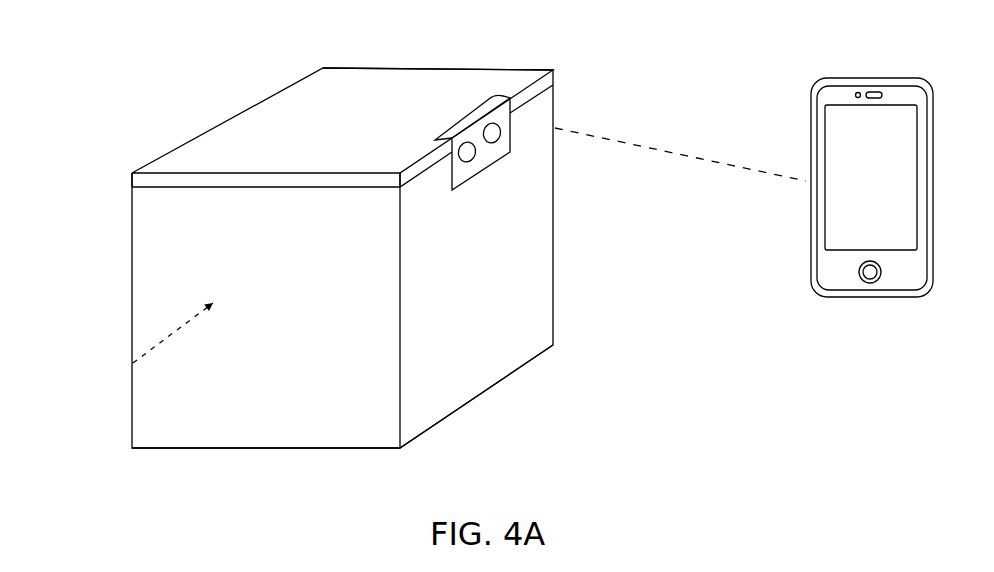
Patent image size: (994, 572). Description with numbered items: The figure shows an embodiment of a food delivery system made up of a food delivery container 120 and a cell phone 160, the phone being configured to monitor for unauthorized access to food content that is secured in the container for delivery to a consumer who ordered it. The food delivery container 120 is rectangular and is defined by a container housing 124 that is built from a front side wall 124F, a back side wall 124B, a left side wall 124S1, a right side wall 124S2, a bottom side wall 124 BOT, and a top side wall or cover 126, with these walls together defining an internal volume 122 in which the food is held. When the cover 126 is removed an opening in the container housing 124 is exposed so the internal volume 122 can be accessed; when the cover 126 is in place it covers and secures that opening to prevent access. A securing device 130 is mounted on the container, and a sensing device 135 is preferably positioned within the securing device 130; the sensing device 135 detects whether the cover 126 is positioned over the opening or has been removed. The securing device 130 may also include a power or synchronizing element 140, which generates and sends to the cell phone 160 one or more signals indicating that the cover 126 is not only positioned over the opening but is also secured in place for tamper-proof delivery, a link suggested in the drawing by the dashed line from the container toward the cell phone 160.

The food delivery container 120 is at (190, 140).
The internal volume 122 is at (133, 363).
The container housing 124 is at (175, 233).
The back side wall 124B is at (280, 93).
The front side wall 124F is at (518, 357).
The left side wall 124S1 is at (247, 266).
The right side wall 124S2 is at (506, 67).
The bottom side wall 124 BOT is at (343, 451).
The top side wall/cover 126 is at (531, 92).
The securing device 130 is at (498, 161).
The sensing device 135 is at (447, 137).
The power or synchronizing element 140 is at (493, 136).
The cell phone 160 is at (868, 78).